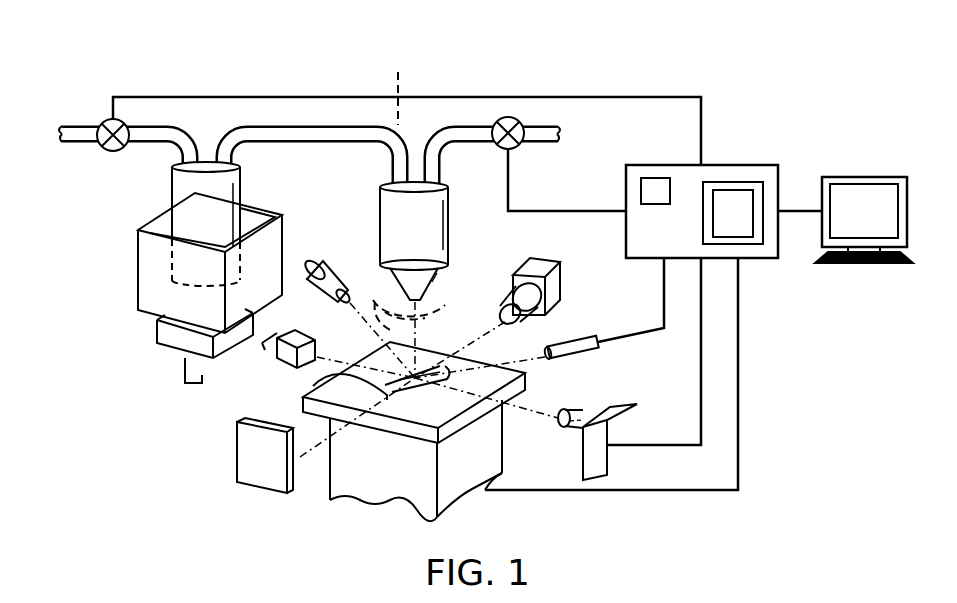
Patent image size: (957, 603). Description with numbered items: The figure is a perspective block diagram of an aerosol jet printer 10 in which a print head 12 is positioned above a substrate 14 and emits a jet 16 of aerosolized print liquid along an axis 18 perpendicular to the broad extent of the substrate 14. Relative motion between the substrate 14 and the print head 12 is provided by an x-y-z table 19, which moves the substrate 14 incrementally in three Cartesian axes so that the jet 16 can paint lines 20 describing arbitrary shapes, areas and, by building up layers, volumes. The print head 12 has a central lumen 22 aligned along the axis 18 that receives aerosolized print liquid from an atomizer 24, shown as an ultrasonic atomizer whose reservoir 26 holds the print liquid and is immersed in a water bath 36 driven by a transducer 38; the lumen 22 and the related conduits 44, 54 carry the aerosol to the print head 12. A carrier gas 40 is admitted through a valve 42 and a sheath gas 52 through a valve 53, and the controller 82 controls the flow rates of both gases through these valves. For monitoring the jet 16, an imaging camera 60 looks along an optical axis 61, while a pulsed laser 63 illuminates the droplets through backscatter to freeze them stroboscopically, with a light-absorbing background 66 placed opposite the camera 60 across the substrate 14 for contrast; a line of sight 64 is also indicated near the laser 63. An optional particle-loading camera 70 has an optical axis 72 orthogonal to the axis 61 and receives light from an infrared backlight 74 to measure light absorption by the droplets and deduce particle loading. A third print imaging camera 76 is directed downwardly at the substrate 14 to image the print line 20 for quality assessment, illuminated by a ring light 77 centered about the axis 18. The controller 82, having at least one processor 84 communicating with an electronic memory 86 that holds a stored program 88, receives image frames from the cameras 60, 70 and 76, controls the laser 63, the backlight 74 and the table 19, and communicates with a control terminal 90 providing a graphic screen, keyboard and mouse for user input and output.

The aerosol jet printer 10 is at (117, 59).
The print head 12 is at (433, 237).
The substrate 14 is at (443, 413).
The jet 16 is at (400, 323).
The axis 18 is at (400, 70).
The x-y-z table 19 is at (377, 497).
The lines 20 is at (353, 376).
The central lumen 22 is at (392, 167).
The atomizer 24 is at (243, 172).
The reservoir 26 is at (178, 188).
The water bath 36 is at (245, 220).
The transducer 38 is at (170, 337).
The carrier gas 40 is at (58, 135).
The valve 42 is at (101, 121).
The inlet conduit 44 is at (147, 143).
The sheath gas 52 is at (565, 133).
The valve 53 is at (520, 150).
The hopper body 54 is at (381, 205).
The imaging camera 60 is at (546, 293).
The optical axis 61 is at (306, 459).
The laser 63 is at (581, 344).
The sensor line of sight 64 is at (533, 358).
The light-absorbing background 66 is at (244, 452).
The particle-loading camera 70 is at (582, 462).
The optical axis 72 is at (524, 410).
The infrared backlight 74 is at (283, 357).
The print imaging camera 76 is at (321, 268).
The ring light 77 is at (442, 303).
The controller 82 is at (668, 165).
The processor 84 is at (641, 190).
The electronic memory 86 is at (735, 182).
The stored program 88 is at (751, 245).
The control terminal 90 is at (862, 177).